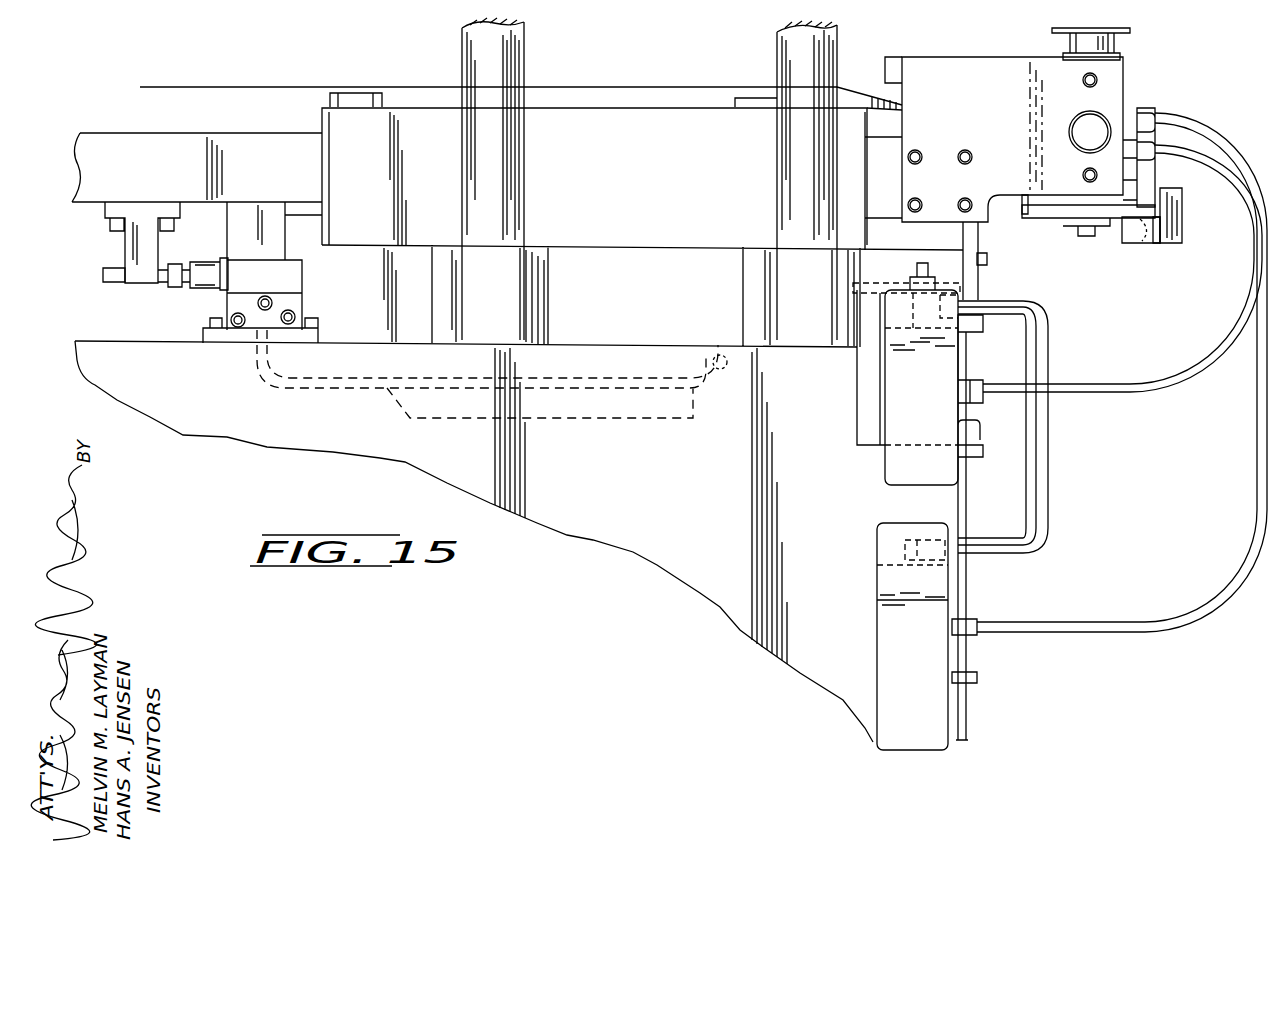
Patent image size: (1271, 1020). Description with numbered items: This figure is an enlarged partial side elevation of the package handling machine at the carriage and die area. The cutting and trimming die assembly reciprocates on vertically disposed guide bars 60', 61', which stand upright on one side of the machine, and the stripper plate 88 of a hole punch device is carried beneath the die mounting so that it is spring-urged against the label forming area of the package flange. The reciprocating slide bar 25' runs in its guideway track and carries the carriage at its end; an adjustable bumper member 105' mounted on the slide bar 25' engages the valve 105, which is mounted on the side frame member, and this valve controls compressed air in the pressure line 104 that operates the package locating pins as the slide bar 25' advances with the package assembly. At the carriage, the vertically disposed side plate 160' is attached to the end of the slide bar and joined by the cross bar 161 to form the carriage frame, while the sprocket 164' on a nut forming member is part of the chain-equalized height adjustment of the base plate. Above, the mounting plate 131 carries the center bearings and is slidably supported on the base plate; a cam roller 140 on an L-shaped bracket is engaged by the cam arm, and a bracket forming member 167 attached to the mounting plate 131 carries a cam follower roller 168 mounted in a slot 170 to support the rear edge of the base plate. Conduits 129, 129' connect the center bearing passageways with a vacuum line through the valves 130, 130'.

The guide bar 61' is at (514, 179).
The guide bar 60' is at (782, 180).
The stripper plate 88 is at (648, 186).
The slide bar 25' is at (188, 208).
The valve 105 is at (290, 272).
The adjustable bumper member 105' is at (165, 287).
The pressure line 104 is at (588, 388).
The cross bar 161 is at (893, 38).
The side plate 160' is at (1028, 125).
The sprocket 164' is at (1117, 46).
The mounting plate 131 is at (1024, 205).
The cam roller 140 is at (1047, 218).
The cam follower roller 168 is at (1120, 232).
The slot 170 is at (1155, 222).
The bracket forming member 167 is at (1170, 242).
The conduit 129 is at (1122, 372).
The conduit 129' is at (1122, 268).
The valve 130' is at (921, 387).
The valve 130 is at (912, 636).